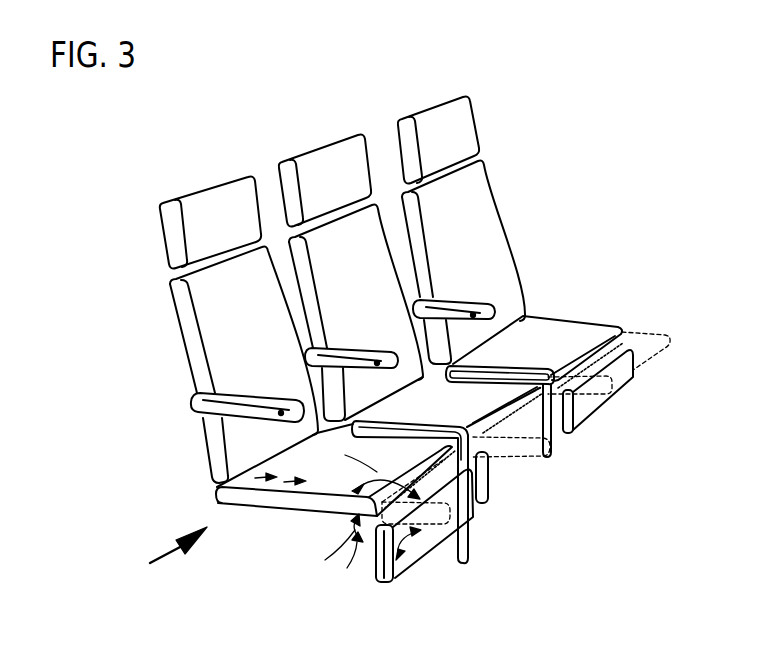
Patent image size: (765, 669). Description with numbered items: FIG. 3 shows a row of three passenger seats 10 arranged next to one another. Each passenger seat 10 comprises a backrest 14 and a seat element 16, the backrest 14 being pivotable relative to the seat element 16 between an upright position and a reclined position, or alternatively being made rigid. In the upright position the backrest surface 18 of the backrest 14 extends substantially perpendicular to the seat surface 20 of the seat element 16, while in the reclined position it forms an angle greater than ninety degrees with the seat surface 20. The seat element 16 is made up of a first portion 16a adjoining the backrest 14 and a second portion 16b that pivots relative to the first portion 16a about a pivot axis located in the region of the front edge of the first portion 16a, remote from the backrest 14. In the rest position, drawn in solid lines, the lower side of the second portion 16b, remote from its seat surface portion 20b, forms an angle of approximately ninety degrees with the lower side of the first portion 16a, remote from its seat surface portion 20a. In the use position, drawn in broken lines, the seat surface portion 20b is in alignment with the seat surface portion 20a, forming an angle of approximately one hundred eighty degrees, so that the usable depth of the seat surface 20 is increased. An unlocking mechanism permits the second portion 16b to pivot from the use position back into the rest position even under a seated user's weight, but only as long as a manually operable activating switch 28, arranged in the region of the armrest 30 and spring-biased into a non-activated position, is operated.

The passenger seat 10 is at (207, 162).
The backrest 14 is at (186, 330).
The seat element 16 is at (262, 487).
The first portion 16a is at (226, 489).
The second portion 16b is at (383, 581).
The backrest surface 18 is at (260, 260).
The seat surface 20 is at (447, 458).
The seat surface portion 20a is at (323, 489).
The seat surface portion 20b is at (400, 568).
The activating switch 28 is at (283, 410).
The armrest 30 is at (234, 409).